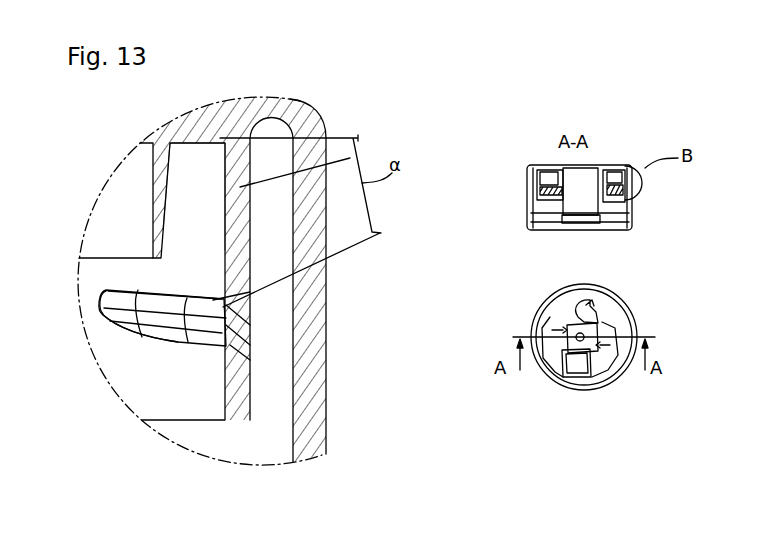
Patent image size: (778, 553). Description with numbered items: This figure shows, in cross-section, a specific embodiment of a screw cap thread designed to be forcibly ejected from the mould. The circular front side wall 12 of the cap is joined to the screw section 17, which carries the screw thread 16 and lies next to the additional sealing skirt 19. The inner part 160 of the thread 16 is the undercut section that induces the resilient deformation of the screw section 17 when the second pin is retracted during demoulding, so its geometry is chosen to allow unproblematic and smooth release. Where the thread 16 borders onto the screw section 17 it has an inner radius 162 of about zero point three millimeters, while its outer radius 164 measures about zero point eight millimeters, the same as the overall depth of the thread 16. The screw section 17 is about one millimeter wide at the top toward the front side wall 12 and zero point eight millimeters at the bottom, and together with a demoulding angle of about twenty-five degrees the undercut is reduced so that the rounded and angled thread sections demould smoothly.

The circular front side wall 12 is at (241, 100).
The screw thread 16 is at (136, 323).
The screw section 17 is at (350, 158).
The additional sealing skirt 19 is at (166, 209).
The inner part of thread 160 is at (172, 296).
The inner radius 162 is at (135, 290).
The outer radius 164 is at (118, 310).